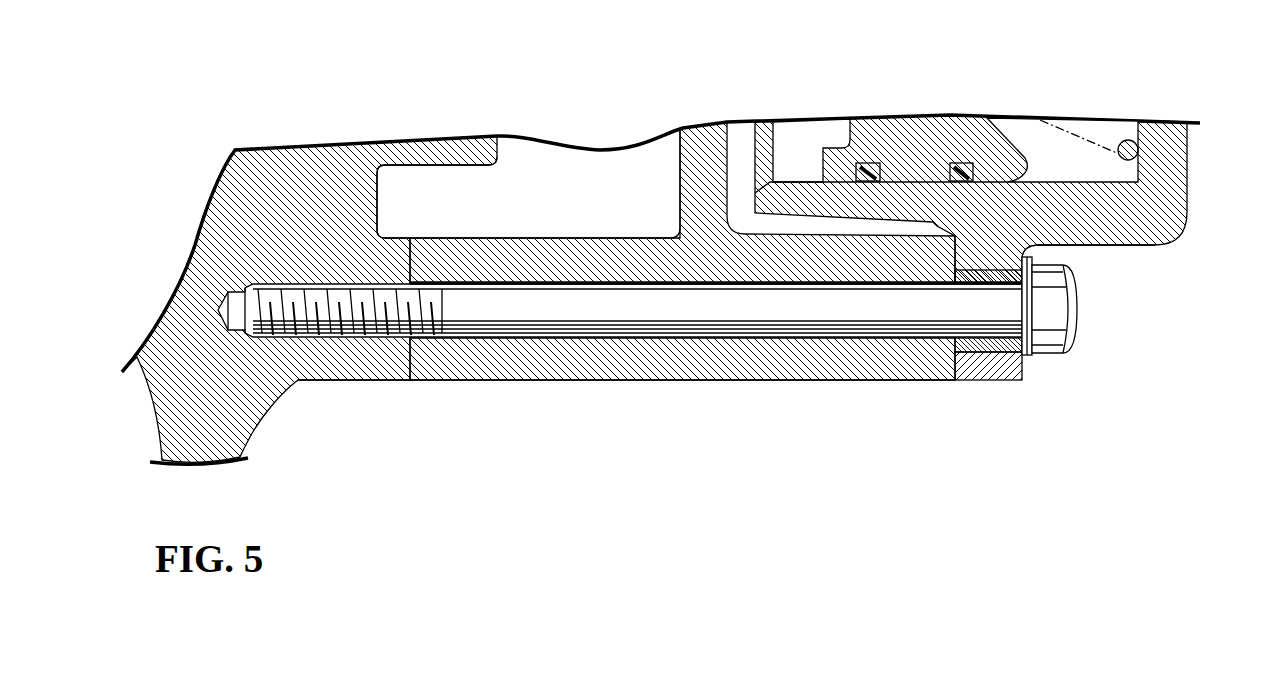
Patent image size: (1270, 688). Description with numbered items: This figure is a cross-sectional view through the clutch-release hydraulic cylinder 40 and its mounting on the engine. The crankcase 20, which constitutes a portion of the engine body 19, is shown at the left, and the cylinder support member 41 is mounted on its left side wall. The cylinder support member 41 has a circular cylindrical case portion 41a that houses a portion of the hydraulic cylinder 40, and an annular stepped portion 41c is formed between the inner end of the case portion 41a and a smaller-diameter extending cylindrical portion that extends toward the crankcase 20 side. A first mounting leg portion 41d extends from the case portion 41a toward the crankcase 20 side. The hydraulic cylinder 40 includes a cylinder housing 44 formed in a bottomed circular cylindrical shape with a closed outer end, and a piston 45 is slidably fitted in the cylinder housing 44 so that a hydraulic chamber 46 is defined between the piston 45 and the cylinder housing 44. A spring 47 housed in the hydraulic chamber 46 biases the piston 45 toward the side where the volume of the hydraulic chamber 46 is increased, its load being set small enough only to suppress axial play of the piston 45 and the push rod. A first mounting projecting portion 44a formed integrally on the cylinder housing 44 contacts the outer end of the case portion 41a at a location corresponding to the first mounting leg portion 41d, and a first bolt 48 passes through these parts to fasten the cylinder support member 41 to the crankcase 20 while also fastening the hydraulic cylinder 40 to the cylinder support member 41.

The engine body 19 is at (315, 381).
The crankcase 20 is at (258, 399).
The hydraulic cylinder 40 is at (1125, 247).
The cylinder support member 41 is at (822, 380).
The case portion 41a is at (898, 267).
The annular stepped portion 41c is at (693, 184).
The first mounting leg portion 41d is at (706, 368).
The cylinder housing 44 is at (1170, 183).
The first mounting projecting portion 44a is at (997, 380).
The piston 45 is at (920, 140).
The hydraulic chamber 46 is at (1033, 135).
The spring 47 is at (1117, 140).
The first bolt 48 is at (1058, 312).